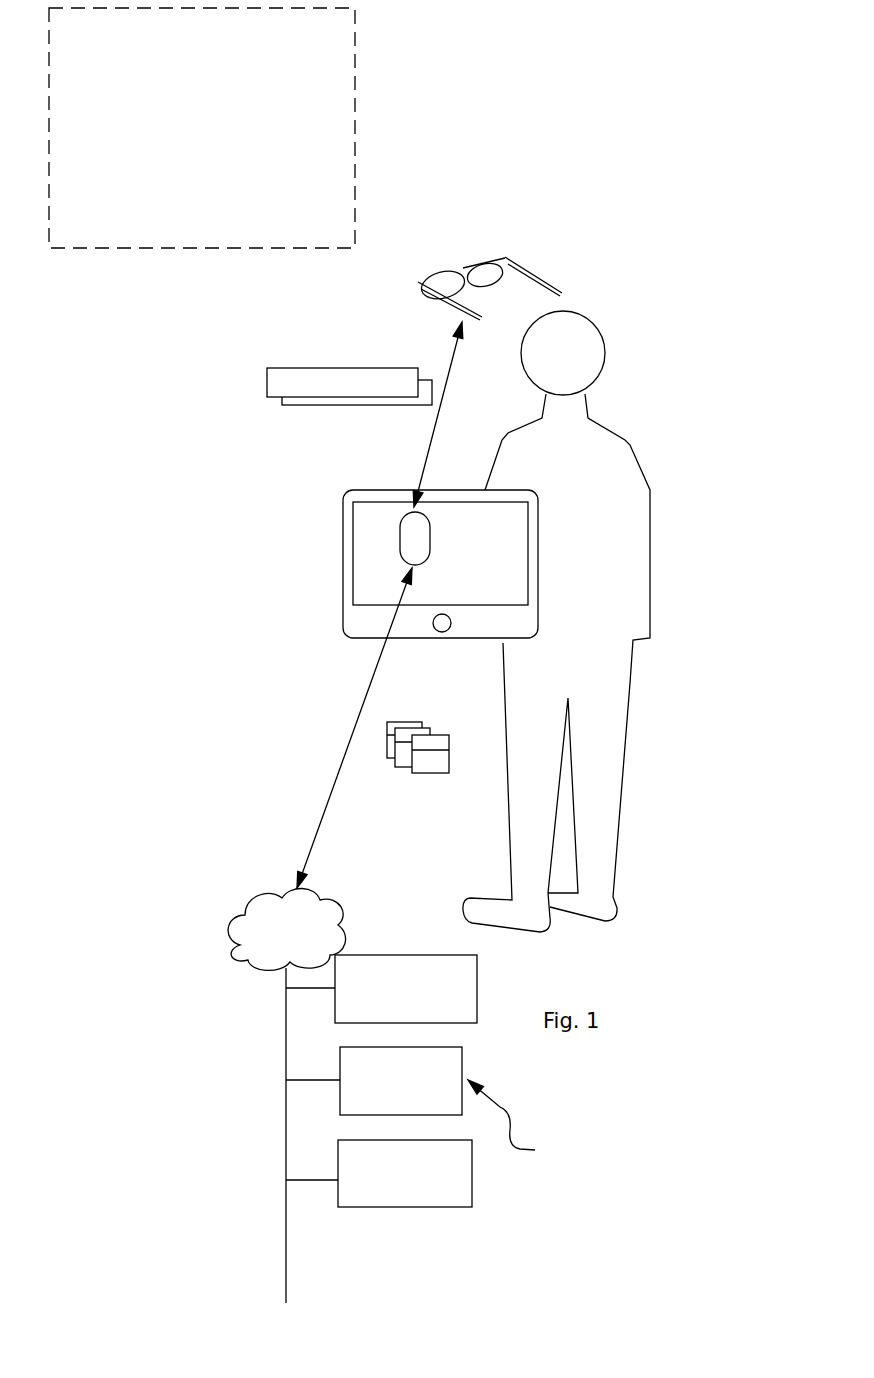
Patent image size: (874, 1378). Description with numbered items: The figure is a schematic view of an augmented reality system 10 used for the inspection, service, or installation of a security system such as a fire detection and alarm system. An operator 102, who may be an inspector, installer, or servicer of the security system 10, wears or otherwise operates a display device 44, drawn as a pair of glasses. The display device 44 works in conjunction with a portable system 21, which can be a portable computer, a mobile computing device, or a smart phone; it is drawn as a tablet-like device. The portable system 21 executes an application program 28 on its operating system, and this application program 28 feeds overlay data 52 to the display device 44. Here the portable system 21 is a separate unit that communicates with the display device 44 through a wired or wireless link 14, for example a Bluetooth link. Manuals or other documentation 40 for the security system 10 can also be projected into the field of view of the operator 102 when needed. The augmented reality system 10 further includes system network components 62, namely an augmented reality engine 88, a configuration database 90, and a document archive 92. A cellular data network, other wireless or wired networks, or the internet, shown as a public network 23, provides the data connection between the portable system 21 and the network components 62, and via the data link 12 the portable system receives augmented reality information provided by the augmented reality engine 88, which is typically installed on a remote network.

The augmented reality system 10 is at (202, 128).
The operator 102 is at (632, 683).
The display device 44 is at (482, 258).
The overlay data 52 is at (349, 386).
The wired or wireless link 14 is at (422, 462).
The portable system 21 is at (343, 621).
The application program 28 is at (400, 540).
The data link 12 is at (340, 767).
The documentation 40 is at (422, 773).
The public network 23 is at (286, 929).
The augmented reality engine 88 is at (406, 989).
The configuration database 90 is at (401, 1081).
The document archive 92 is at (405, 1173).
The system network components 62 is at (516, 1123).